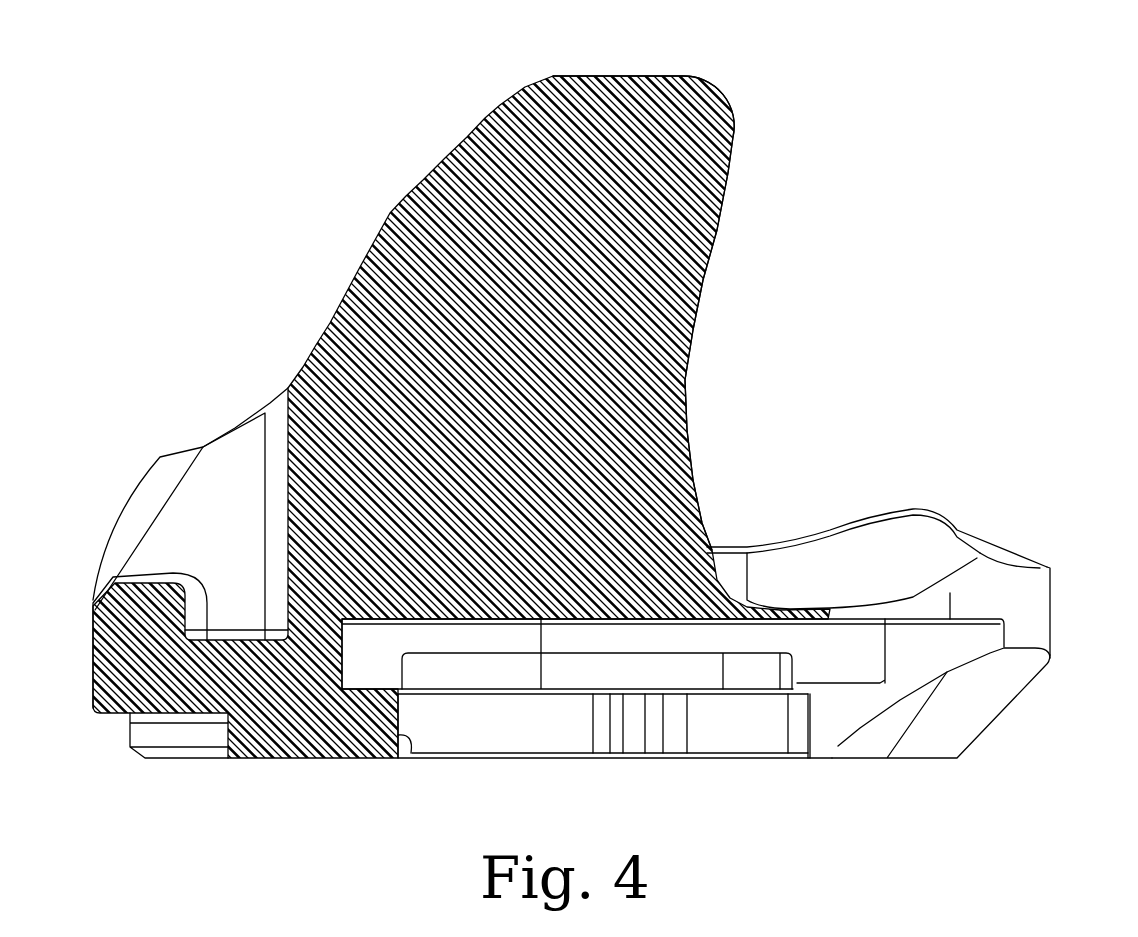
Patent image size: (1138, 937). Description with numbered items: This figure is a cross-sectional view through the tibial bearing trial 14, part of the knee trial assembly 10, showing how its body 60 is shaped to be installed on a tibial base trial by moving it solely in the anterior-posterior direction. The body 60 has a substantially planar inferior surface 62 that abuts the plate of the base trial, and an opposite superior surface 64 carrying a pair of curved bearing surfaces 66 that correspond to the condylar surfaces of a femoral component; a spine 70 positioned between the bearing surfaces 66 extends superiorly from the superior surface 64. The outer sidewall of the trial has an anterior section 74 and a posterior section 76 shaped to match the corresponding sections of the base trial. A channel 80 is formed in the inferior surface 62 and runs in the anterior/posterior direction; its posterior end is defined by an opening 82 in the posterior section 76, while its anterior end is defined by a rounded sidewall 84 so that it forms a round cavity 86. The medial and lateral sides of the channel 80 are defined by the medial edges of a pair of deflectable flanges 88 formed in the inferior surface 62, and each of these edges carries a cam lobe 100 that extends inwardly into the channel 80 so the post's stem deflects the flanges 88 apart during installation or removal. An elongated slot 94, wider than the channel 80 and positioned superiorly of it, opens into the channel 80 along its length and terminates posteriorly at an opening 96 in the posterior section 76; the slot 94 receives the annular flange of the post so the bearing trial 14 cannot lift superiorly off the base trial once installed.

The ventilation device 10 is at (210, 112).
The tibial bearing trial 14 is at (795, 78).
The body 60 is at (978, 537).
The inferior surface 62 is at (265, 760).
The superior surface 64 is at (814, 540).
The curved bearing surfaces 66 is at (768, 548).
The spine 70 is at (720, 173).
The anterior section 74 is at (93, 638).
The posterior section 76 is at (1050, 616).
The channel 80 is at (735, 730).
The opening 82 is at (846, 746).
The rounded sidewall 84 is at (412, 758).
The round cavity 86 is at (468, 732).
The deflectable flanges 88 is at (543, 733).
The elongated slot 94 is at (835, 668).
The opening 96 is at (993, 645).
The cam lobe 100 is at (632, 733).